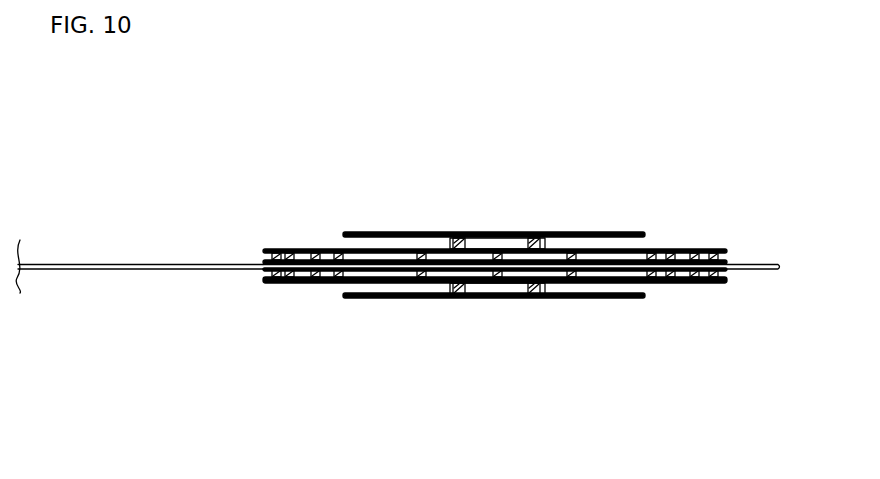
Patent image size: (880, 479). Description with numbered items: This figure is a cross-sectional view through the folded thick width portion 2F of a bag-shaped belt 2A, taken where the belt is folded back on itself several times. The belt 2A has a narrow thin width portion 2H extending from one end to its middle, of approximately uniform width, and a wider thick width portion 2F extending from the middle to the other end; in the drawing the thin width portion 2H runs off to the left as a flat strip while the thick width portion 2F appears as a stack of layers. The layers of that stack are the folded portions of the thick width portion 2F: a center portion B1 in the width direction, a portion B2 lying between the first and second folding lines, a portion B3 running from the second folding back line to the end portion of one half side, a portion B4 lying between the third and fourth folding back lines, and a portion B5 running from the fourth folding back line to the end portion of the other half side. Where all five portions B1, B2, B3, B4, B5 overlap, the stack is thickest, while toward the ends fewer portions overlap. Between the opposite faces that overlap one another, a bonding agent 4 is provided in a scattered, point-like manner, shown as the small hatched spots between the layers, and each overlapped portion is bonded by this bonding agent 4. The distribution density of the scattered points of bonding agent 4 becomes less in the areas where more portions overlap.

The bag-shaped belt 2A is at (356, 160).
The thick width portion 2F is at (366, 340).
The thin width portion 2H is at (105, 273).
The bonding agent 4 is at (302, 249).
The center portion B1 is at (778, 263).
The portion between folding lines L1 and L2 B2 is at (725, 249).
The portion from folding back line L2 to end portion B3 is at (627, 232).
The portion between folding back lines L3 and L4 B4 is at (700, 285).
The portion from folding back line L4 to end portion B5 is at (635, 300).